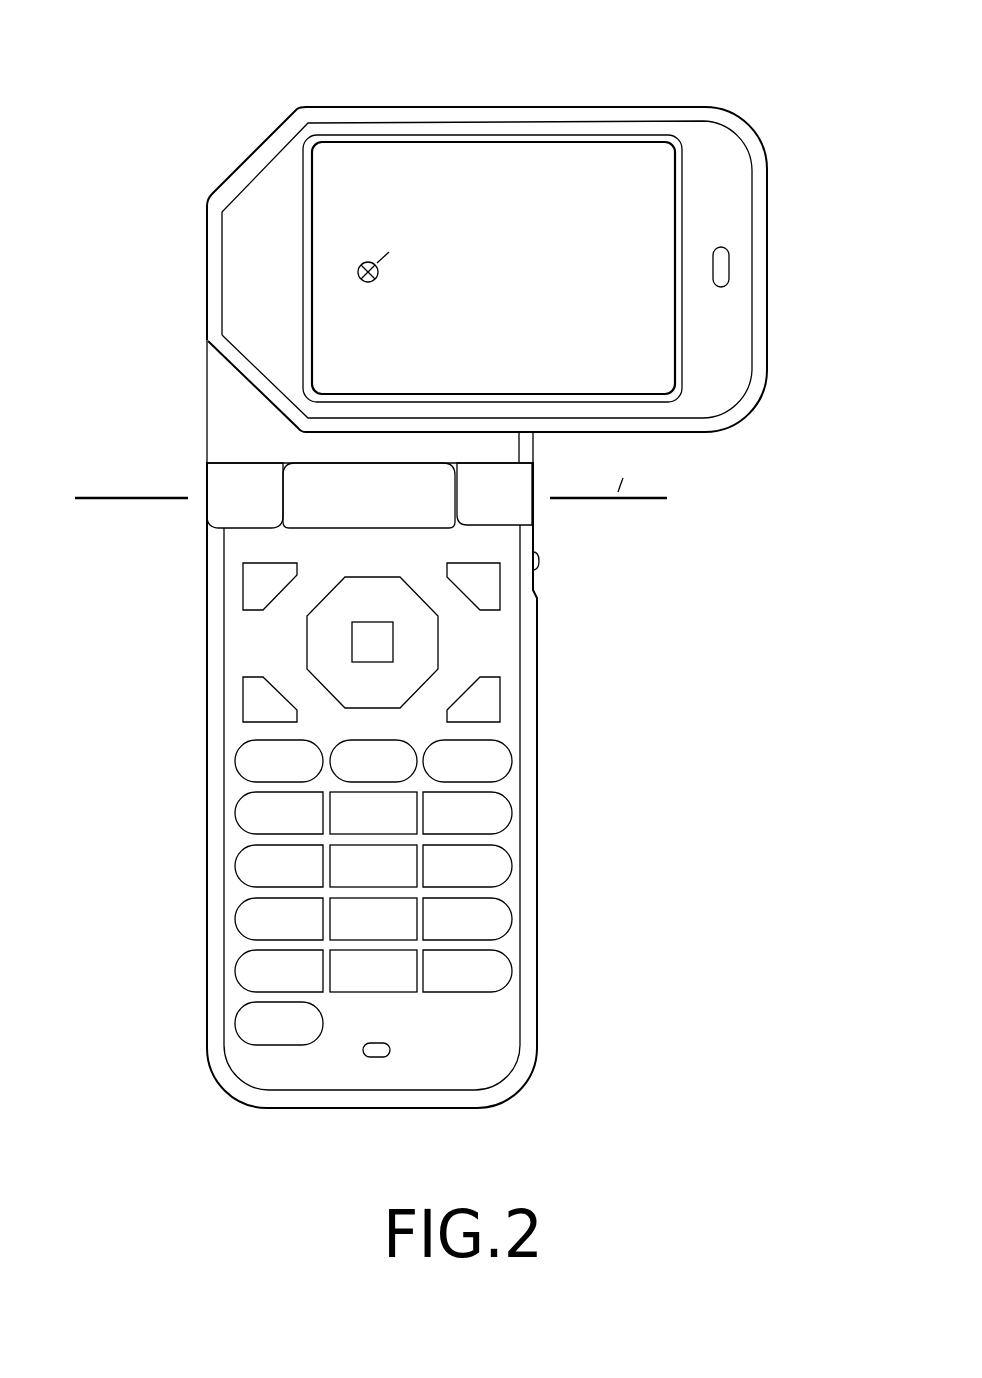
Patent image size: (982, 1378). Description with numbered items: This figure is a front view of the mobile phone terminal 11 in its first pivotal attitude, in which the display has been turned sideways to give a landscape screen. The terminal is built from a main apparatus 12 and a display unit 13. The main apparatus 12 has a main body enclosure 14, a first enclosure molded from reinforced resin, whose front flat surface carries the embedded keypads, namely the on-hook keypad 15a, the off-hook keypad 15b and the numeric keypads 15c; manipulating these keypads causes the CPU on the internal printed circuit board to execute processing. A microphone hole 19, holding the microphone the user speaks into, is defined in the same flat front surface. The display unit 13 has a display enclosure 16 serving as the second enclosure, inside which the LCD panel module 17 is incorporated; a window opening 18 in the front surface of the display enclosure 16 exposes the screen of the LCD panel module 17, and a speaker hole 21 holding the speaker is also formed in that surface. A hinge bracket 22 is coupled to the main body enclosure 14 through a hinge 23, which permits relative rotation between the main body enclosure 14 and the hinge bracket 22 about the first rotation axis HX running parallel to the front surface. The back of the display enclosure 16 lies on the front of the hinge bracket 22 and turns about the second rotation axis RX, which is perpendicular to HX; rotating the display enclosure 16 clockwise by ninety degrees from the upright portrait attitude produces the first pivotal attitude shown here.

The mobile phone terminal 11 is at (213, 95).
The main apparatus 12 is at (216, 670).
The display unit 13 is at (212, 200).
The main body enclosure 14 is at (538, 965).
The on-hook keypad 15a is at (245, 763).
The off-hook keypad 15b is at (493, 757).
The numeric keypads 15c is at (255, 868).
The display enclosure 16 is at (722, 108).
The LCD panel module 17 is at (538, 155).
The window opening 18 is at (490, 142).
The microphone hole 19 is at (366, 1056).
The speaker hole 21 is at (721, 283).
The hinge bracket 22 is at (207, 400).
The hinge 23 is at (284, 497).